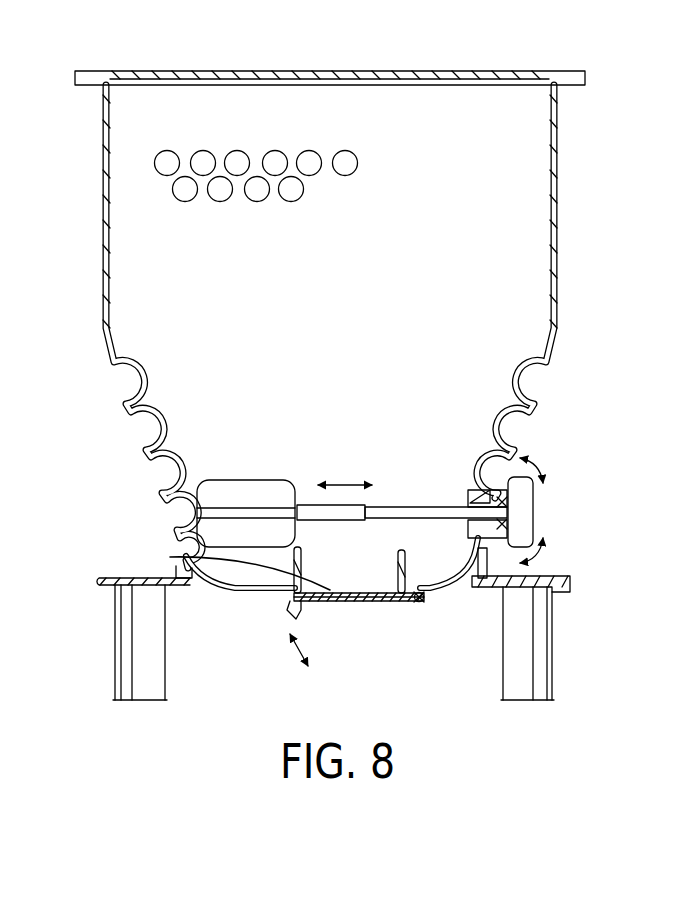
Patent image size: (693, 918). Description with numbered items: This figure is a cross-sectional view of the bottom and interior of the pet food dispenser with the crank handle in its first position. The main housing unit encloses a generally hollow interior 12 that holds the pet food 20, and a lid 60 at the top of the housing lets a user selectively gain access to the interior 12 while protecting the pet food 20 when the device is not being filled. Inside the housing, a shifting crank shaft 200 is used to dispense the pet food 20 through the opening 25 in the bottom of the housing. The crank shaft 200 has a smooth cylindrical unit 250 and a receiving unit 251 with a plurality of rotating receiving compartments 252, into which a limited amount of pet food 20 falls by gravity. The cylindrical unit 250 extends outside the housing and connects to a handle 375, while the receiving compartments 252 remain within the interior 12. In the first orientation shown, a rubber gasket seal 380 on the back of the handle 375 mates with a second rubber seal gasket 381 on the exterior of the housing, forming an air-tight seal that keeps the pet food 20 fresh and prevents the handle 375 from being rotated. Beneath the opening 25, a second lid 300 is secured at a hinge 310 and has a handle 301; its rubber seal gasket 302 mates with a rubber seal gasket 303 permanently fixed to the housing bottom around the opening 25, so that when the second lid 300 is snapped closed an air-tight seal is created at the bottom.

The generally hollow interior 12 is at (297, 100).
The lid 60 is at (393, 71).
The pet food 20 is at (203, 162).
The opening 25 is at (190, 557).
The crank shaft 200 is at (352, 480).
The cylindrical unit 250 is at (383, 508).
The receiving unit 251 is at (232, 482).
The receiving compartments 252 is at (280, 498).
The second rubber seal gasket 381 is at (497, 500).
The rubber gasket seal 380 is at (508, 508).
The handle 375 is at (523, 518).
The second lid 300 is at (335, 601).
The handle 301 is at (287, 612).
The rubber seal gasket 302 is at (372, 601).
The rubber seal gasket 303 is at (363, 592).
The hinge 310 is at (425, 600).